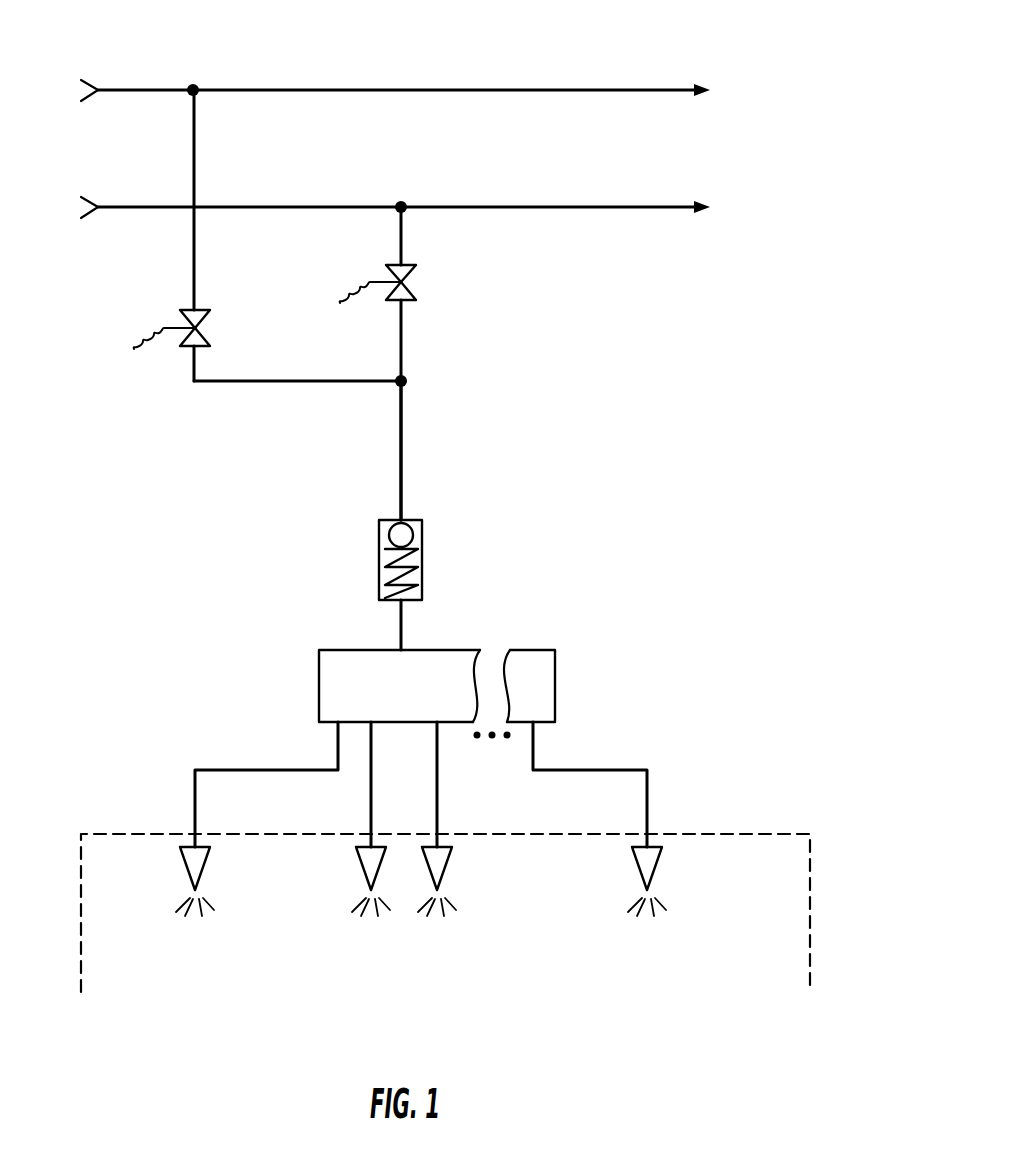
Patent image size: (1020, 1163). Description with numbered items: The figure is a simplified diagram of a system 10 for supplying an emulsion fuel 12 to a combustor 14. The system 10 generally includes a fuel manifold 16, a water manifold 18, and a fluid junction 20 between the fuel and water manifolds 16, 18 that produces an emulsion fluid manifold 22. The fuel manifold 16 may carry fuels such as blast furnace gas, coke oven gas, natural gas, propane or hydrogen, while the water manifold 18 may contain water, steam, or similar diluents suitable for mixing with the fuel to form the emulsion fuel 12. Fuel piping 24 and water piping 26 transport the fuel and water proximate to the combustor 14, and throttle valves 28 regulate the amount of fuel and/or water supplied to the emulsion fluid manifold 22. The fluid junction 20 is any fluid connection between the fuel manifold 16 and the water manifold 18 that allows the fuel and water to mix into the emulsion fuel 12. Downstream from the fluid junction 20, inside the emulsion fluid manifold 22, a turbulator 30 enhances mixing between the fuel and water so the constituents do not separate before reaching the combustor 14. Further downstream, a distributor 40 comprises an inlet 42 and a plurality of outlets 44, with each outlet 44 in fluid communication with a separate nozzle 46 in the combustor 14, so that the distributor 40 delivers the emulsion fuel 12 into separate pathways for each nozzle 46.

The system 10 is at (439, 502).
The emulsion fuel 12 is at (384, 896).
The combustor 14 is at (765, 833).
The fuel manifold 16 is at (622, 186).
The water manifold 18 is at (622, 70).
The fluid junction 20 is at (405, 381).
The emulsion fluid manifold 22 is at (425, 425).
The fuel piping 24 is at (128, 209).
The water piping 26 is at (128, 92).
The throttle valves 28 is at (186, 343).
The turbulator 30 is at (379, 560).
The distributor 40 is at (393, 698).
The inlet 42 is at (401, 650).
The outlets 44 is at (368, 724).
The nozzle 46 is at (212, 848).